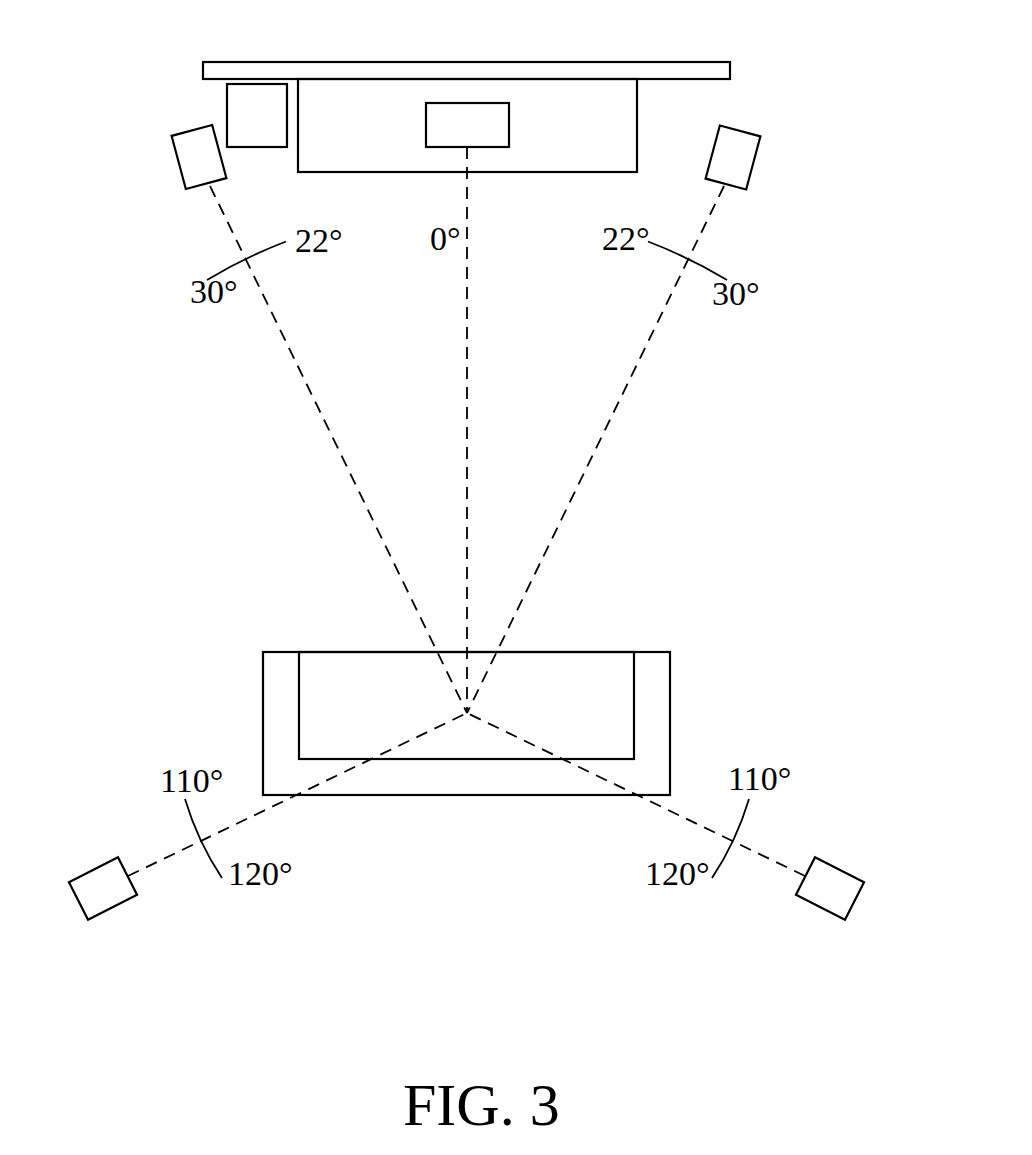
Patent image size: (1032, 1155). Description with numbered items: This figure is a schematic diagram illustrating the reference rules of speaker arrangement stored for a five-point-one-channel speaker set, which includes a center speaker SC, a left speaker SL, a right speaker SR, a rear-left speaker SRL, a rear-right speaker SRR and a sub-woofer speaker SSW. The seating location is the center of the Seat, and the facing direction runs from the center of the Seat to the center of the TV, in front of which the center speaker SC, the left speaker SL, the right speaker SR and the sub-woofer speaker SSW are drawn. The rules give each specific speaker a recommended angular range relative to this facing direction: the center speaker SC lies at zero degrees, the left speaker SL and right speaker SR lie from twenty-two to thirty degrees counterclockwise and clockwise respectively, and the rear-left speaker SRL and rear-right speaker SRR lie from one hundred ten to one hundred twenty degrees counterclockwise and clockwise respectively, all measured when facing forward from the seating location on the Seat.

The element TV is at (660, 62).
The sub-woofer speaker SSW is at (227, 110).
The left speaker SL is at (178, 158).
The center speaker SC is at (509, 125).
The right speaker SR is at (740, 128).
The seat Seat is at (670, 722).
The rear-left speaker SRL is at (93, 868).
The rear-right speaker SRR is at (840, 867).